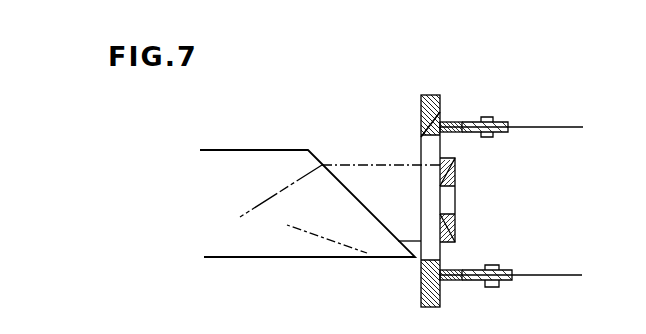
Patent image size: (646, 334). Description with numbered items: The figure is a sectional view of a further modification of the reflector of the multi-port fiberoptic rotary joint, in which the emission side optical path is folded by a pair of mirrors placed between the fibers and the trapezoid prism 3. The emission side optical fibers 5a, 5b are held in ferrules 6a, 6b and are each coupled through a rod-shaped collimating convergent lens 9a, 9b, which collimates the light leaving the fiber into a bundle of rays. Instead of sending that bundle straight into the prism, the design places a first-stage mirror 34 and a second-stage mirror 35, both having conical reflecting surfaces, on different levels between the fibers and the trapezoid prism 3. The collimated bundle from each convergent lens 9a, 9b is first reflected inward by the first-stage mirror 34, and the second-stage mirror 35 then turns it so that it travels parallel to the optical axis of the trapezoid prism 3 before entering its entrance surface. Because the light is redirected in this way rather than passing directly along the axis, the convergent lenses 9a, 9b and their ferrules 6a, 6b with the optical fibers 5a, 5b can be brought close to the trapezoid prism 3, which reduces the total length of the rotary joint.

The trapezoid prism 3 is at (252, 150).
The second-stage mirror 35 is at (440, 172).
The first-stage mirror 34 is at (440, 121).
The emission side optical fiber 5a is at (557, 127).
The ferrule 6a is at (508, 133).
The rod-shaped collimating convergent lens 9a is at (455, 135).
The rod-shaped collimating convergent lens 9b is at (458, 269).
The ferrule 6b is at (508, 270).
The emission side optical fiber 5b is at (572, 275).